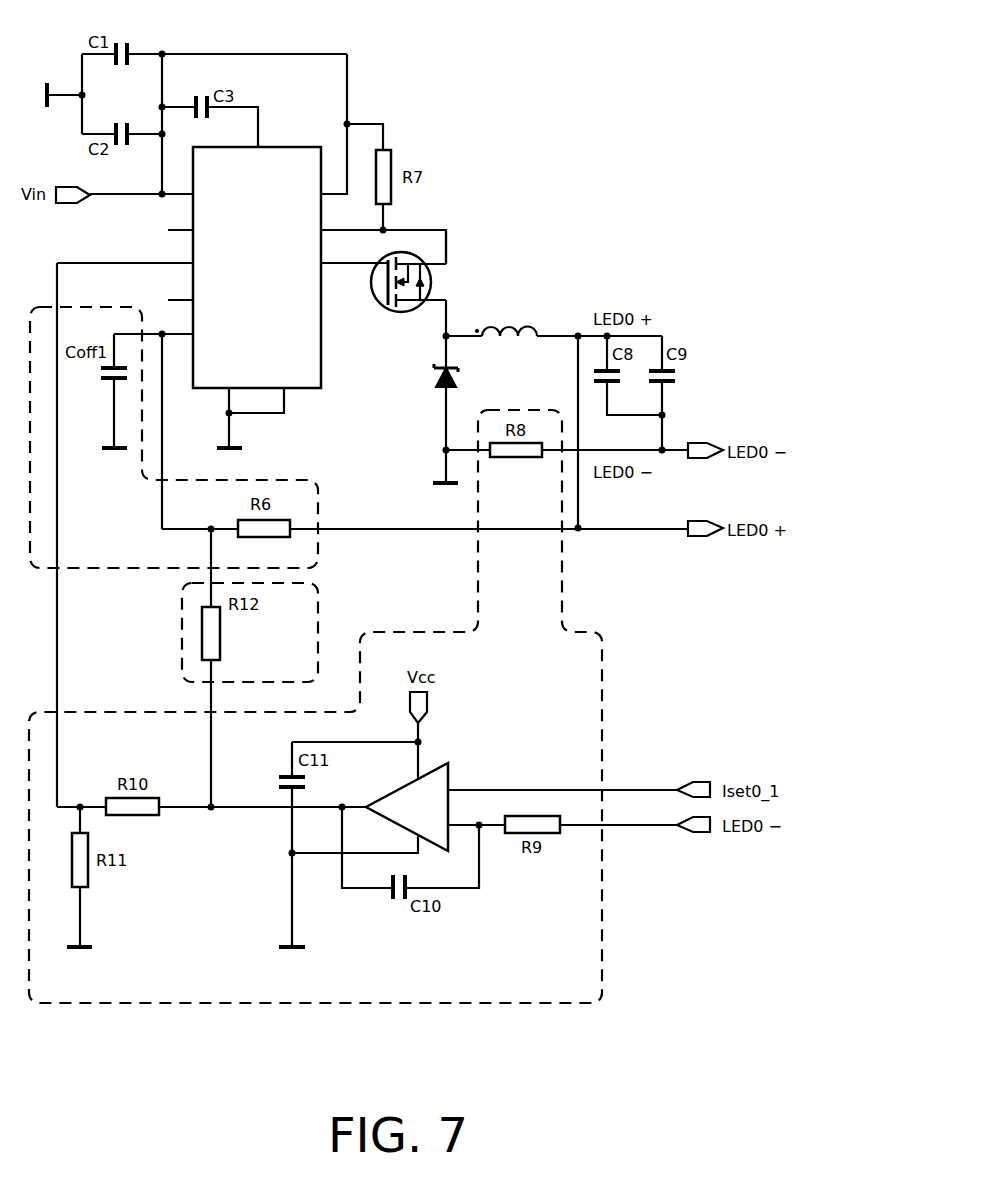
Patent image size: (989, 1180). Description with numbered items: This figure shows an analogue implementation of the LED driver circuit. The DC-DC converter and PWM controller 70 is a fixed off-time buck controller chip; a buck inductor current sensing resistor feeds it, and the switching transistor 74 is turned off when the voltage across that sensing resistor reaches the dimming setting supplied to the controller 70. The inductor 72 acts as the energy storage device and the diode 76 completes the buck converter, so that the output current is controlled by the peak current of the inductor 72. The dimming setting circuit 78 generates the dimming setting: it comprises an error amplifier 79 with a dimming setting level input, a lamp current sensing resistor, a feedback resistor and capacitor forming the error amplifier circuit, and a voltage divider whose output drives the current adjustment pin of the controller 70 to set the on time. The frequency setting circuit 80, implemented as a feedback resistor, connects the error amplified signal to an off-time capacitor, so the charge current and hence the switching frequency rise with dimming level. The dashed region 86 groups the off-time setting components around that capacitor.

The DC-DC converter and PWM controller 70 is at (292, 147).
The inductor 72 is at (510, 320).
The switching transistor 74 is at (375, 300).
The diode 76 is at (432, 375).
The dimming setting circuit 78 is at (83, 711).
The error amplifier 79 is at (430, 770).
The frequency setting circuit 80 is at (182, 648).
The off-time / current adjust network 86 is at (87, 570).